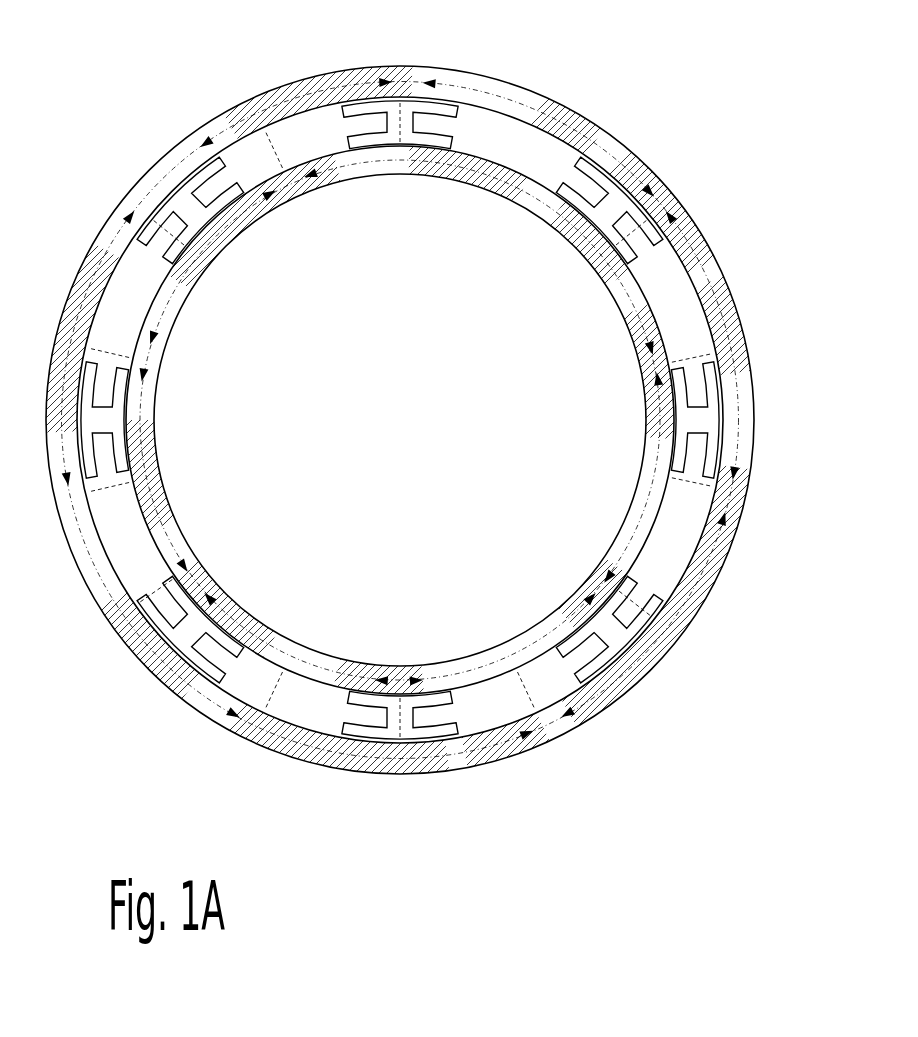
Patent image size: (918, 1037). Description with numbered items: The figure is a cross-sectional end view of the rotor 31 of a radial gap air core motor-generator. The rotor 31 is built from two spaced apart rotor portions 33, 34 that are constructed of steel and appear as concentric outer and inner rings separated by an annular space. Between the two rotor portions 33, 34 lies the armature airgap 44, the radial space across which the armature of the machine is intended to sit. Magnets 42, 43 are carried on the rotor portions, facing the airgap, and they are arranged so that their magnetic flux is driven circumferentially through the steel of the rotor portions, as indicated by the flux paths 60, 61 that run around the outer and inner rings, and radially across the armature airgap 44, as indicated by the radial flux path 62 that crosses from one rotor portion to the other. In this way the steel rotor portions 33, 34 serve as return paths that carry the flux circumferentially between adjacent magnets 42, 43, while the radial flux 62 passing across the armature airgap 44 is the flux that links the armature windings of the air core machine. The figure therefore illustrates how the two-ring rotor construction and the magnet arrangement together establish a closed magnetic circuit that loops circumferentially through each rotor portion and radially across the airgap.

The rotor 31 is at (228, 80).
The rotor portion 33 is at (538, 88).
The rotor portion 34 is at (337, 175).
The magnet 42 is at (667, 248).
The magnet 43 is at (630, 258).
The armature airgap 44 is at (668, 536).
The circumferential magnetic flux 60 is at (173, 553).
The circumferential magnetic flux 61 is at (315, 747).
The radial magnetic flux 62 is at (270, 690).